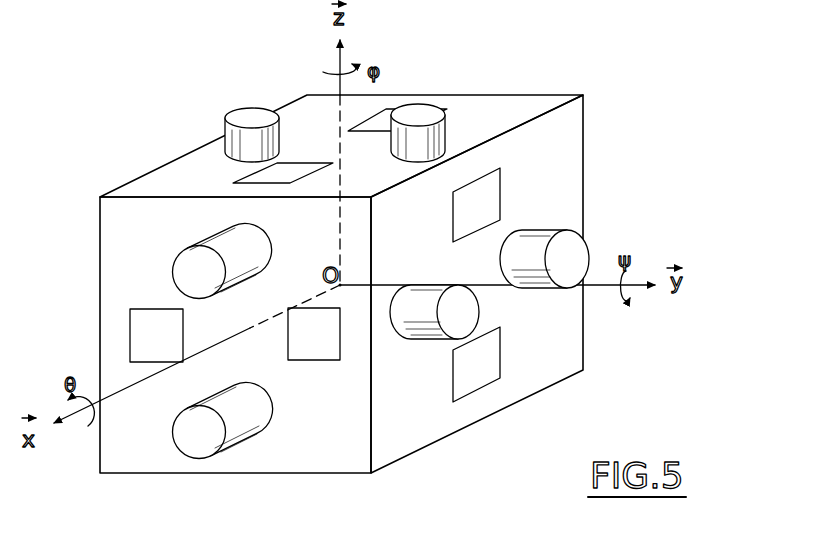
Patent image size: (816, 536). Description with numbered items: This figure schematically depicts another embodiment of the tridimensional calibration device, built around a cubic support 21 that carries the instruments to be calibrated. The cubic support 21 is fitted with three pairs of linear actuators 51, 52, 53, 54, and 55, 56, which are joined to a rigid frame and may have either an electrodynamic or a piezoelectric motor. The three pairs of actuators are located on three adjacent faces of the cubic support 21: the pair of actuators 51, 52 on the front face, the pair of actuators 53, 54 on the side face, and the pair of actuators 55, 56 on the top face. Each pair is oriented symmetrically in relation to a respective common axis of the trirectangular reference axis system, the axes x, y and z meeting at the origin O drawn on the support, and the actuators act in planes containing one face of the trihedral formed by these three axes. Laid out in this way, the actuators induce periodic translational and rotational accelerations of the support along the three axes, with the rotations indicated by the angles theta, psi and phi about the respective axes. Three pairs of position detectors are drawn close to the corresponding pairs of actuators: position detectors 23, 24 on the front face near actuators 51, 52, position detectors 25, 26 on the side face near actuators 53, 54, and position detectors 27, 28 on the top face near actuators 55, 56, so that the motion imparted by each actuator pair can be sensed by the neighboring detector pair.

The cubic support 21 is at (158, 161).
The position detector 23 is at (153, 306).
The position detector 24 is at (330, 364).
The position detector 25 is at (493, 389).
The position detector 26 is at (505, 168).
The position detector 27 is at (230, 184).
The position detector 28 is at (361, 123).
The linear actuator 51 is at (267, 420).
The linear actuator 52 is at (267, 239).
The linear actuator 53 is at (399, 289).
The linear actuator 54 is at (548, 226).
The linear actuator 55 is at (229, 105).
The linear actuator 56 is at (450, 137).